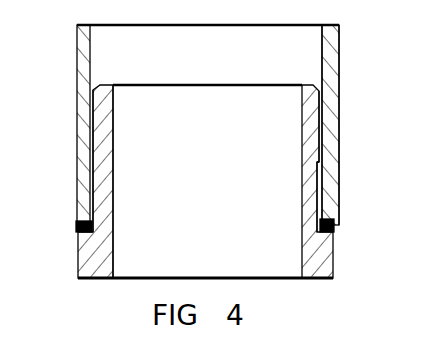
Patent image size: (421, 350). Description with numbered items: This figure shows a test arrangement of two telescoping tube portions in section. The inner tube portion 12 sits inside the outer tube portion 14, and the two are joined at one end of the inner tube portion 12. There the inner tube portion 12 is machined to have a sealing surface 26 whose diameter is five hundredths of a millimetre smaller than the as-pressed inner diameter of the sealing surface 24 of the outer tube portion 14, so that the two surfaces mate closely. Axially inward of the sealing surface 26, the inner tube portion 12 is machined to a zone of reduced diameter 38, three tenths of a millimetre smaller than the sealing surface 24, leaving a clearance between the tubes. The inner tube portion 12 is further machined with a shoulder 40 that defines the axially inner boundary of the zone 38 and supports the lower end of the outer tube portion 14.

The inner tube portion 12 is at (312, 181).
The outer tube portion 14 is at (329, 80).
The sealing surface of the outer tube portion 24 is at (99, 137).
The sealing surface 26 is at (324, 125).
The zone of reduced diameter 38 is at (321, 173).
The shoulder 40 is at (85, 225).